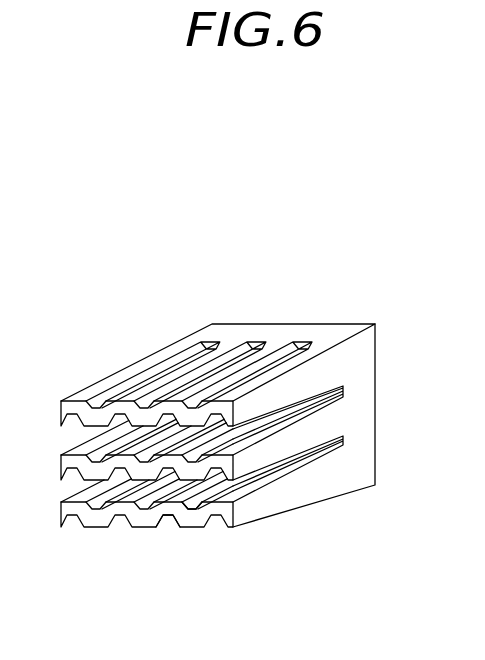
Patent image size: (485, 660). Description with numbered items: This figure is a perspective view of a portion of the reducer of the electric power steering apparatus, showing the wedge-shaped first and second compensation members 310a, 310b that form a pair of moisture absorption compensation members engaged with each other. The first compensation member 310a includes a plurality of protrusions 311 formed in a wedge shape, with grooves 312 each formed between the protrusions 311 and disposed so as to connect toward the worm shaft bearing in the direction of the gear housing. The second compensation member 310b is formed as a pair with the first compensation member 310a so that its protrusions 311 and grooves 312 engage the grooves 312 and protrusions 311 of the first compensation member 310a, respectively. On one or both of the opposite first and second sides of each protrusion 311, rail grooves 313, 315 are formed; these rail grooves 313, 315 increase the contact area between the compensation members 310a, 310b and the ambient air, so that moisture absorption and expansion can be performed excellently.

The first compensation member 310a is at (225, 402).
The second compensation member 310b is at (143, 211).
The protrusions 311 is at (263, 500).
The grooves 312 is at (303, 467).
The rail groove 313 is at (169, 517).
The rail groove 315 is at (190, 509).